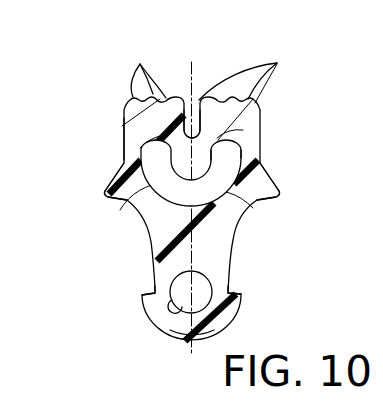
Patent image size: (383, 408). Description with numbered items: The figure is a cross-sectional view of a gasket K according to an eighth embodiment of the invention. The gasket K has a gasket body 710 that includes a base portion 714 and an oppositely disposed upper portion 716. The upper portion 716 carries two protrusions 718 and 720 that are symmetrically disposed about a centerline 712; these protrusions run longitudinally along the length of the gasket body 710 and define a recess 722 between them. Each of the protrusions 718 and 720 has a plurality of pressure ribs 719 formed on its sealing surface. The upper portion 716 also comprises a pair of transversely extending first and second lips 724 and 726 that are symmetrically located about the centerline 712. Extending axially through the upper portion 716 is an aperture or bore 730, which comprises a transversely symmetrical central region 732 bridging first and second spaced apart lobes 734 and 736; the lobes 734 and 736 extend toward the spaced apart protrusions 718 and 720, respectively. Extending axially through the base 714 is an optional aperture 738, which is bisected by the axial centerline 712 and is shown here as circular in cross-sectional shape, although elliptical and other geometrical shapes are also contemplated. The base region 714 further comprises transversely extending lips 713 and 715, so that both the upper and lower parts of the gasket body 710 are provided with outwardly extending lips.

The gasket body 710 is at (131, 229).
The centerline 712 is at (191, 345).
The transversely extending lip 713 is at (152, 293).
The base portion 714 is at (224, 313).
The transversely extending lip 715 is at (234, 295).
The upper portion 716 is at (122, 130).
The protrusion 718 is at (130, 113).
The pressure ribs 719 is at (141, 65).
The protrusion 720 is at (252, 123).
The recess 722 is at (191, 100).
The first lip 724 is at (110, 176).
The second lip 726 is at (267, 187).
The aperture or bore 730 is at (244, 201).
The central region 732 is at (130, 199).
The first lobe 734 is at (153, 153).
The second lobe 736 is at (230, 152).
The aperture 738 is at (175, 308).
The gasket K is at (243, 229).